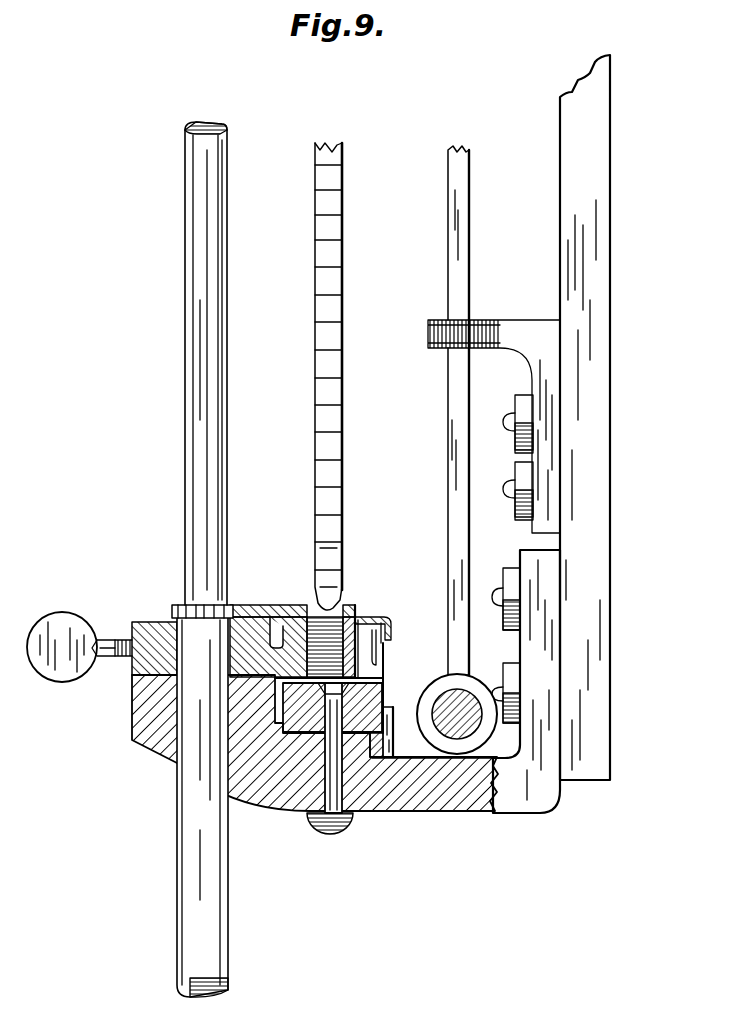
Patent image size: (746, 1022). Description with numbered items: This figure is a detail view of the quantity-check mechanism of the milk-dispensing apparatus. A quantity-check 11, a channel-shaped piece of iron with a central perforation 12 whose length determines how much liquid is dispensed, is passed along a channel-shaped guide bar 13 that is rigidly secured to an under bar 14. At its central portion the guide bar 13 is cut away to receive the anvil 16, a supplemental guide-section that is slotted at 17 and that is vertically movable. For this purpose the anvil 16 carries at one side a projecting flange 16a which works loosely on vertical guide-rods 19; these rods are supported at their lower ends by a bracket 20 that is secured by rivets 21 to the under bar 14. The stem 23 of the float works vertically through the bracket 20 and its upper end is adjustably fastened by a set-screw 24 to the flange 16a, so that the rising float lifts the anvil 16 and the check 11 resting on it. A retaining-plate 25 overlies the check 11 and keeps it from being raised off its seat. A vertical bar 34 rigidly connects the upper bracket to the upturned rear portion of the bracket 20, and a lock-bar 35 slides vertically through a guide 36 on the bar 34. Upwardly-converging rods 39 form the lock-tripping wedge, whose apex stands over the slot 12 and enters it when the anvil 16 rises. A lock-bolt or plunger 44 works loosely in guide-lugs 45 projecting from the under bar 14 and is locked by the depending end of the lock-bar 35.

The quantity-check 11 is at (387, 620).
The central perforation 12 is at (312, 611).
The channel-shaped bar 13 is at (378, 660).
The under bar 14 is at (380, 690).
The anvil 16 is at (358, 600).
The projecting flange 16a is at (245, 625).
The slot 17 is at (267, 673).
The vertical guide-rods 19 is at (208, 470).
The bracket 20 is at (282, 795).
The rivets 21 is at (347, 830).
The vertically-projecting stem 23 is at (190, 880).
The set-screw 24 is at (103, 660).
The retaining-plate 25 is at (180, 605).
The vertical bar 34 is at (607, 262).
The lock-bar 35 is at (456, 408).
The guide 36 is at (508, 330).
The upwardly-converging rods 39 is at (336, 349).
The lock-bolt 44 is at (470, 728).
The guide-lugs 45 is at (460, 748).